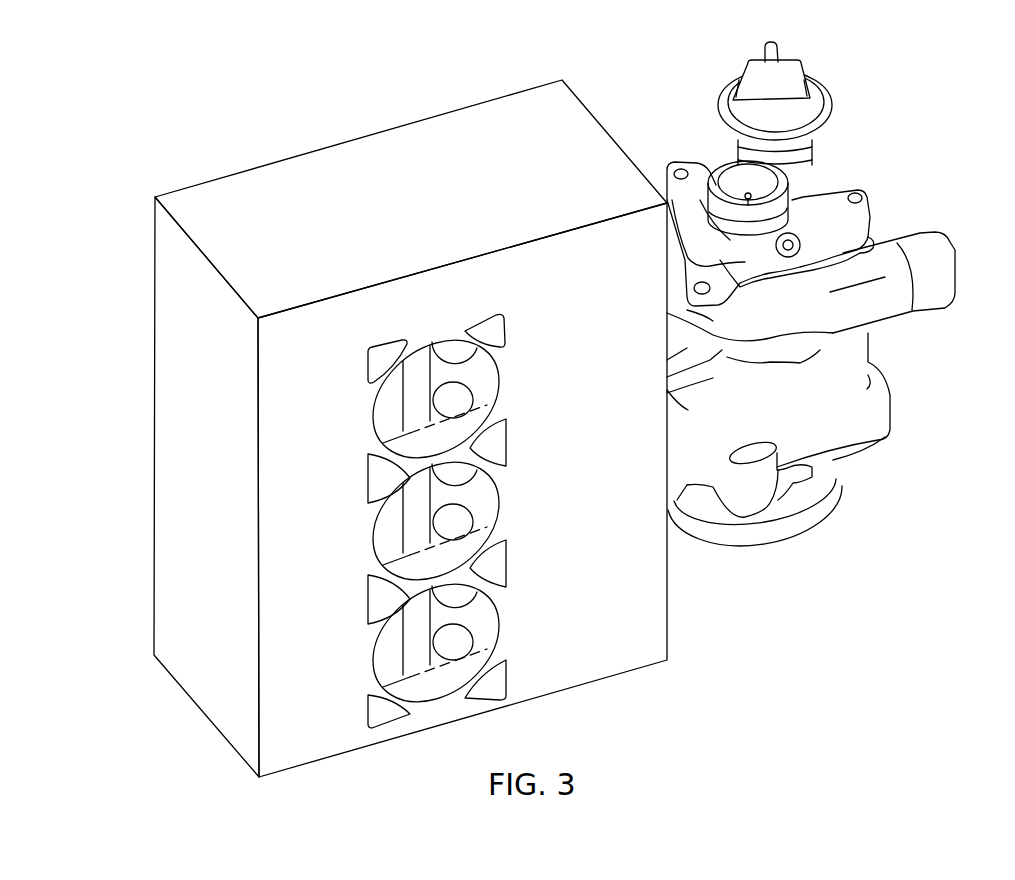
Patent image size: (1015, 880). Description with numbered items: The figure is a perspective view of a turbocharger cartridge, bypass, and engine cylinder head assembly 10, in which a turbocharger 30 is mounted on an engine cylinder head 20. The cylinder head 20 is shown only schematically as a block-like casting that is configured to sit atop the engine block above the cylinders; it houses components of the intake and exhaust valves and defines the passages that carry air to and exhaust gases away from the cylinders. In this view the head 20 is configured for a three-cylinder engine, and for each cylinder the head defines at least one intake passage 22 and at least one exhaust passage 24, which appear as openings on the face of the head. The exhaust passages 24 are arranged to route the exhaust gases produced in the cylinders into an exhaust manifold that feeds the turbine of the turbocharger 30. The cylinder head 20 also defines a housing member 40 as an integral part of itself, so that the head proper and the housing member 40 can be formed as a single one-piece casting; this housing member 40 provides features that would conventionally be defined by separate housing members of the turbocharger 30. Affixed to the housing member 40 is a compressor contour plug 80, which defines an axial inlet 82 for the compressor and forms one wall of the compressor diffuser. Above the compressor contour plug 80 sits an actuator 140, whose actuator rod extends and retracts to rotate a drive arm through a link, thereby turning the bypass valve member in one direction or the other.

The turbocharger cartridge, bypass, and engine cylinder head assembly 10 is at (431, 96).
The engine cylinder head 20 is at (321, 178).
The intake passage 22 is at (463, 403).
The exhaust passage 24 is at (460, 356).
The turbocharger 30 is at (884, 341).
The housing member 40 is at (810, 418).
The compressor contour plug 80 is at (780, 196).
The axial inlet 82 is at (731, 184).
The actuator 140 is at (798, 107).